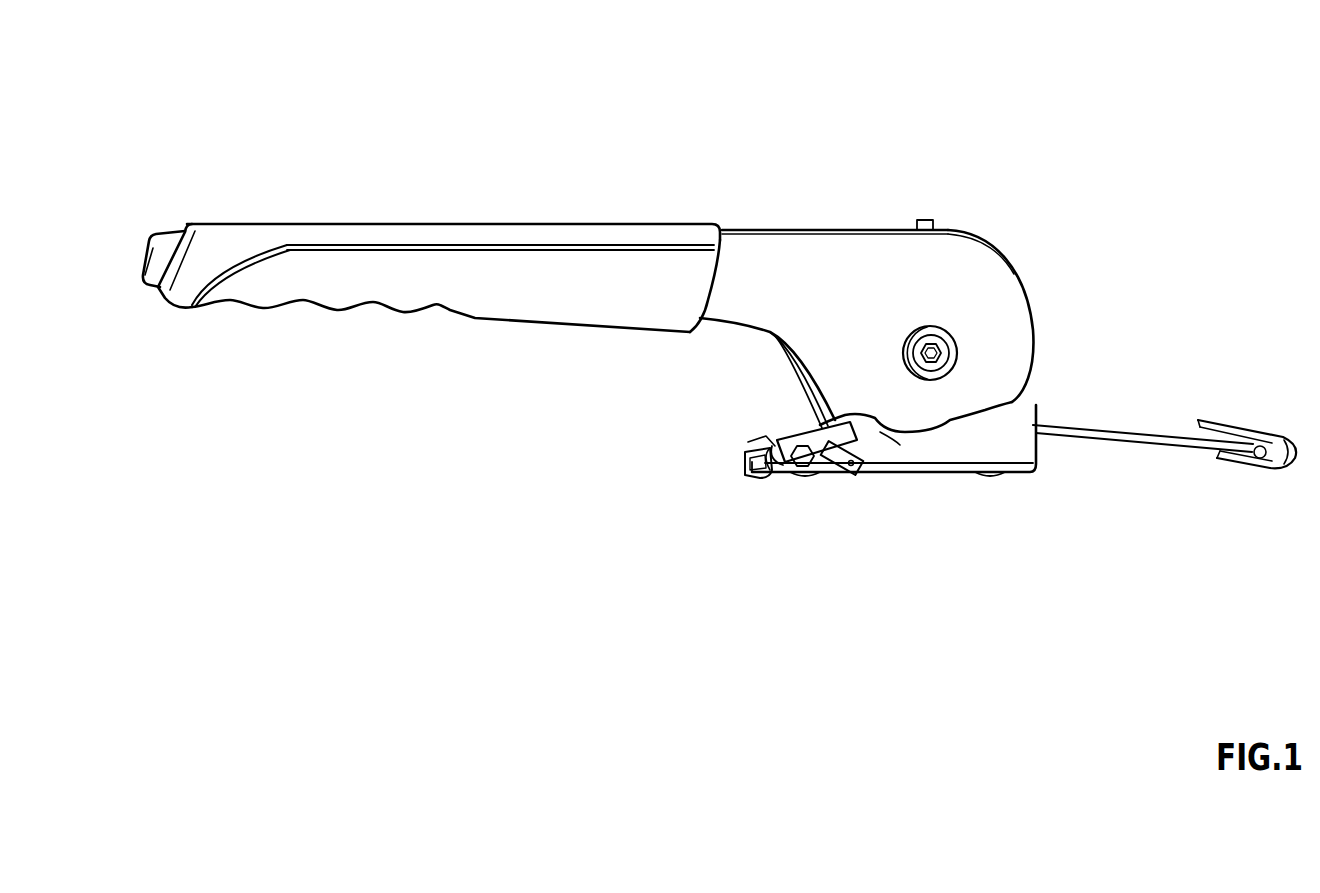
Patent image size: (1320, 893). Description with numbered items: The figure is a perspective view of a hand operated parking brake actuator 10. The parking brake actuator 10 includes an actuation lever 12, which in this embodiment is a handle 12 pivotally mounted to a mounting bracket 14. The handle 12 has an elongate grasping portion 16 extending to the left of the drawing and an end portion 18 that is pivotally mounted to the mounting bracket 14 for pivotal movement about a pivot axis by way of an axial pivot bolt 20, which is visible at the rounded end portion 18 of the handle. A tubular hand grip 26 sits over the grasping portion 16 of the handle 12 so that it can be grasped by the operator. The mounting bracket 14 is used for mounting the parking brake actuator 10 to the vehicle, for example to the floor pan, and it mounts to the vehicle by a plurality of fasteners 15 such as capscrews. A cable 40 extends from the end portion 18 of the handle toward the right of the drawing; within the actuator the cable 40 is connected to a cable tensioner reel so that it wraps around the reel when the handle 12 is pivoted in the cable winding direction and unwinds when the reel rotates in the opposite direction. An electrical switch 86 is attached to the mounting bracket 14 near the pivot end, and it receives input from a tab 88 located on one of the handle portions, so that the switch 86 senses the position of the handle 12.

The parking brake actuator 10 is at (678, 84).
The actuation lever 12 is at (750, 228).
The mounting bracket 14 is at (970, 445).
The fasteners 15 is at (745, 455).
The elongate grasping portion 16 is at (747, 292).
The end portion 18 is at (995, 272).
The axial pivot bolt 20 is at (945, 353).
The tubular hand grip 26 is at (522, 294).
The cable 40 is at (1125, 430).
The electrical switch 86 is at (815, 455).
The tab 88 is at (893, 435).